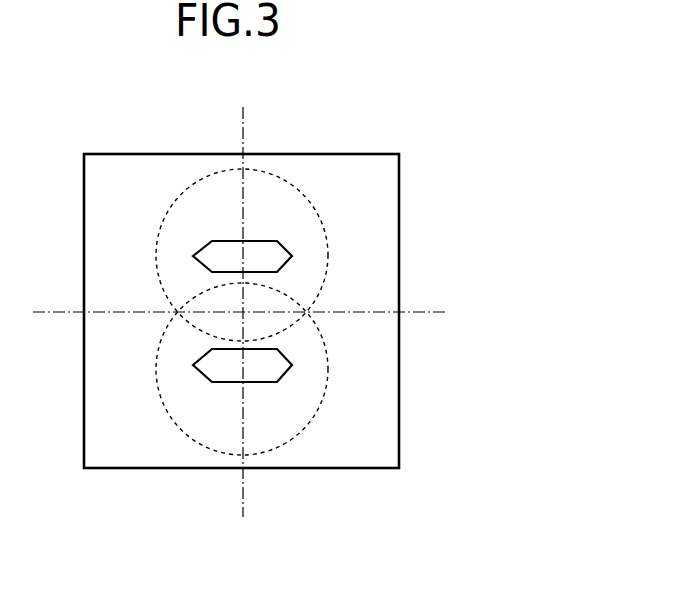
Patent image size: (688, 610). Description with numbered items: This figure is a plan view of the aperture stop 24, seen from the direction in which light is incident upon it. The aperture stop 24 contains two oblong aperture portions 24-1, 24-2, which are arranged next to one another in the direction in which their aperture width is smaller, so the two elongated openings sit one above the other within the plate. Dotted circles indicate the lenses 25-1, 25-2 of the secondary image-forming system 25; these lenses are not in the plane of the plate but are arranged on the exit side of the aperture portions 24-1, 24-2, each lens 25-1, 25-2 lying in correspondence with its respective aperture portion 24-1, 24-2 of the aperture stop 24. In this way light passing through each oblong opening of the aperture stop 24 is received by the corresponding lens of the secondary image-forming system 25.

The aperture stop 24 is at (111, 165).
The oblong aperture portion 24-1 is at (270, 240).
The oblong aperture portion 24-2 is at (267, 372).
The secondary image-forming system 25 is at (370, 312).
The lens 25-1 is at (330, 252).
The lens 25-2 is at (330, 363).